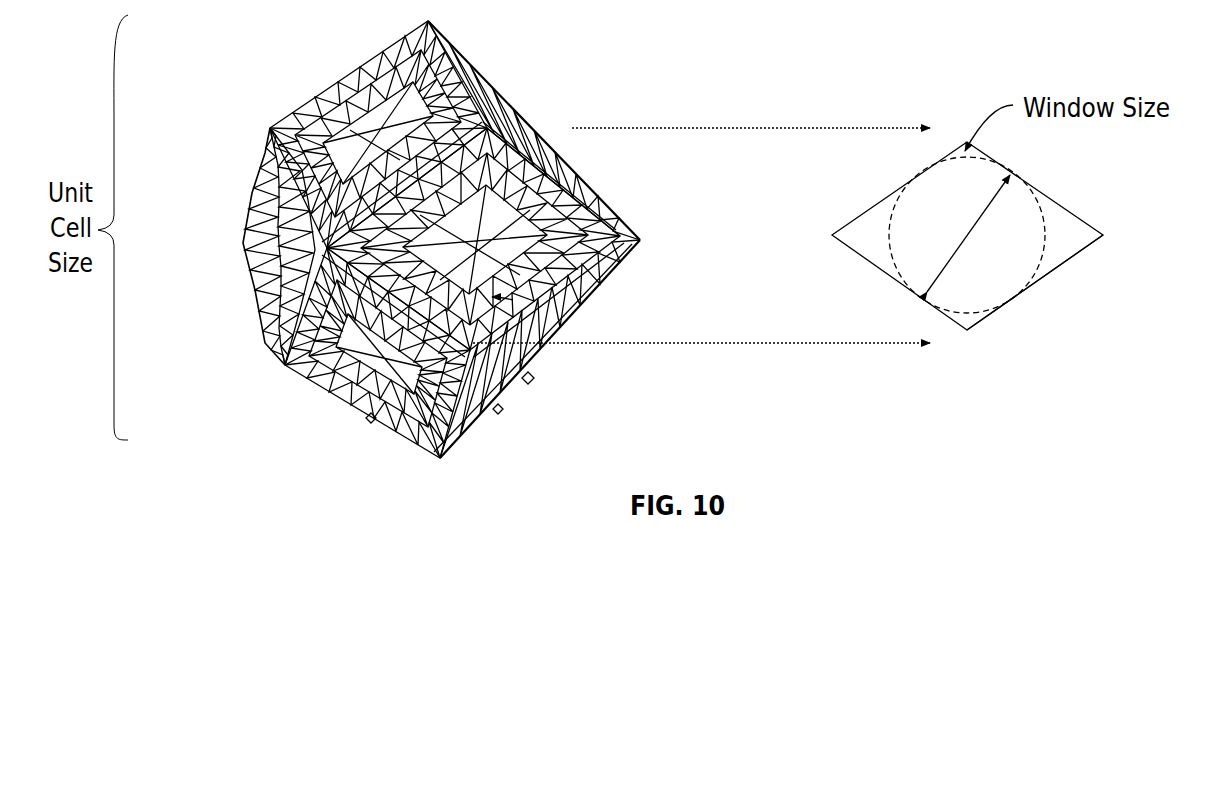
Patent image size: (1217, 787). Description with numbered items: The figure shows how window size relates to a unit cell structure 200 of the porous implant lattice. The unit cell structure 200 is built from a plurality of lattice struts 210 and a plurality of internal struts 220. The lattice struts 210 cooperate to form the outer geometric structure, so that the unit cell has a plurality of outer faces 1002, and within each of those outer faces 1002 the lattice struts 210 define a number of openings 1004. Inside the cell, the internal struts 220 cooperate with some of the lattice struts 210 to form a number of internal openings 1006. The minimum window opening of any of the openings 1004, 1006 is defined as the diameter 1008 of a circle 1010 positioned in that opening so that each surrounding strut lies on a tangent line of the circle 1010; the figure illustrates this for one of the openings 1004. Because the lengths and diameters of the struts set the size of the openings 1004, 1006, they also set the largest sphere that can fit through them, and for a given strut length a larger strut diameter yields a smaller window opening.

The unit cell structure 200 is at (252, 40).
The lattice struts 210 is at (333, 107).
The internal struts 220 is at (278, 128).
The outer faces 1002 is at (533, 378).
The openings 1004 is at (607, 230).
The internal openings 1006 is at (570, 343).
The diameter 1008 is at (952, 260).
The circle 1010 is at (1045, 247).